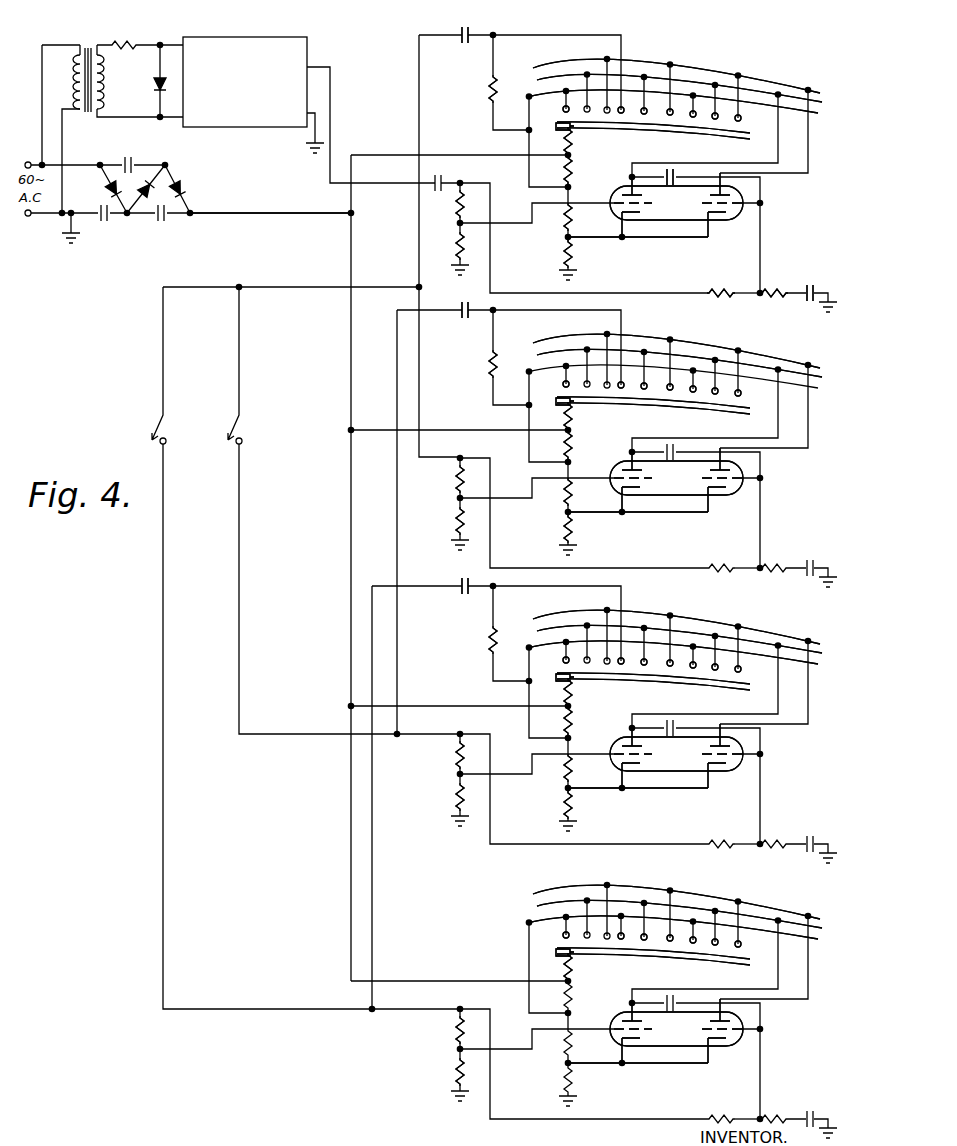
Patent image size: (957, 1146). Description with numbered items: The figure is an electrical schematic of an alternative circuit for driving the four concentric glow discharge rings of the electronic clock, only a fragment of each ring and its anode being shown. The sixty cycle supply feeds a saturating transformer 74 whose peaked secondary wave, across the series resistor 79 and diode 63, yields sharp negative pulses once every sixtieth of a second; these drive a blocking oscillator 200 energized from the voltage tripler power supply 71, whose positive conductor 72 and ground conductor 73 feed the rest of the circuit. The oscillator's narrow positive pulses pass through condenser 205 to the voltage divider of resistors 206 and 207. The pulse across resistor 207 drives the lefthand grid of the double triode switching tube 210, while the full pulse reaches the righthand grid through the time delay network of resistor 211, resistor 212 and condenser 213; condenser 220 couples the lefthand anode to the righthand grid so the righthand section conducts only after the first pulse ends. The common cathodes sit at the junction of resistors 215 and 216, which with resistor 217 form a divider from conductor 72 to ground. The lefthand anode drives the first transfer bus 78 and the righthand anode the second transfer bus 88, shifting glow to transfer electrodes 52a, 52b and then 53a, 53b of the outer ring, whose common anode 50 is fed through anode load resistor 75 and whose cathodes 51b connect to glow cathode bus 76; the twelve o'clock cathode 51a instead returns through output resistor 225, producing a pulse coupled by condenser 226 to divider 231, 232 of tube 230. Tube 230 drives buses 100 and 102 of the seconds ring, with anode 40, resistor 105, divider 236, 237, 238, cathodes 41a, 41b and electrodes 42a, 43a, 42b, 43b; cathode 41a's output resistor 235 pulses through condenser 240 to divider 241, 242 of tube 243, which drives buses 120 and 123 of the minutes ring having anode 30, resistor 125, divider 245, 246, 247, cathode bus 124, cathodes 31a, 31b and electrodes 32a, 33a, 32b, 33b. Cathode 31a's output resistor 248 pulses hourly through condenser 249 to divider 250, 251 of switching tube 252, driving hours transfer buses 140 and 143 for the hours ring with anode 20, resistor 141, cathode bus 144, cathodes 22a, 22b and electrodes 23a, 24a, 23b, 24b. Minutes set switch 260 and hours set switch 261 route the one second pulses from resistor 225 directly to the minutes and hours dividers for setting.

The saturating transformer 74 is at (86, 119).
The resistor 79 is at (136, 40).
The rectifier diode 63 is at (152, 84).
The blocking oscillator 200 is at (237, 118).
The voltage tripler power supply 71 is at (155, 155).
The power supply conductor 72 is at (230, 213).
The ground conductor 73 is at (57, 224).
The hours set switch 261 is at (141, 432).
The minutes set switch 260 is at (216, 432).
The condenser 226 is at (463, 41).
The output resistor 225 is at (486, 94).
The condenser 205 is at (444, 175).
The resistor 206 is at (453, 206).
The resistor 207 is at (455, 247).
The common anode 50 is at (560, 127).
The anode load resistor 75 is at (563, 150).
The resistor 217 is at (565, 174).
The resistor 215 is at (566, 224).
The resistor 216 is at (560, 260).
The condenser 220 is at (638, 177).
The double triode switching tube 210 is at (713, 217).
The resistor 211 is at (710, 292).
The resistor 212 is at (775, 288).
The condenser 213 is at (811, 291).
The transfer bus 88 is at (714, 50).
The first common transfer bus 78 is at (764, 88).
The common glow cathode bus 76 is at (807, 127).
The glow cathode 51a is at (621, 113).
The transfer electrode 52a is at (644, 114).
The transfer electrode 53a is at (670, 115).
The glow cathode 51b is at (693, 117).
The transfer electrode 52b is at (715, 119).
The transfer electrode 53b is at (738, 121).
The condenser 240 is at (450, 301).
The output resistor 235 is at (463, 364).
The resistor 231 is at (435, 479).
The resistor 232 is at (435, 521).
The common anode 40 is at (641, 396).
The anode resistor 105 is at (552, 416).
The resistor 236 is at (588, 445).
The resistor 237 is at (544, 502).
The resistor 238 is at (539, 533).
The double triode tube 230 is at (688, 480).
The transfer bus 102 is at (676, 350).
The transfer bus 100 is at (692, 377).
The glow cathode 41a is at (603, 406).
The transfer electrode 42a is at (629, 403).
The transfer electrode 43a is at (656, 411).
The glow cathode 41b is at (685, 406).
The transfer electrode 42b is at (713, 414).
The transfer electrode 43b is at (752, 414).
The condenser 249 is at (437, 576).
The output resistor 248 is at (461, 645).
The resistor 241 is at (430, 757).
The resistor 242 is at (427, 798).
The common anode 30 is at (639, 673).
The anode resistor 125 is at (551, 693).
The resistor 245 is at (588, 721).
The resistor 246 is at (541, 780).
The resistor 247 is at (540, 811).
The double triode tube 243 is at (689, 756).
The transfer bus 123 is at (676, 615).
The transfer bus 120 is at (679, 626).
The glow cathode bus 124 is at (685, 675).
The glow cathode 31a is at (603, 681).
The transfer electrode 32a is at (629, 686).
The transfer electrode 33a is at (658, 681).
The glow cathode 31b is at (682, 690).
The transfer electrode 32b is at (709, 684).
The transfer electrode 33b is at (741, 691).
The resistor 250 is at (428, 1031).
The resistor 251 is at (427, 1072).
The common anode 20 is at (643, 948).
The anode resistor 141 is at (526, 967).
The switching tube 252 is at (688, 1031).
The transfer bus 143 is at (676, 890).
The hours transfer bus 140 is at (679, 903).
The glow cathode bus 144 is at (685, 957).
The glow cathode 22a is at (603, 957).
The transfer electrode 23a is at (633, 959).
The transfer electrode 24a is at (668, 963).
The glow cathode 22b is at (703, 961).
The transfer electrode 23b is at (731, 963).
The transfer electrode 24b is at (757, 957).